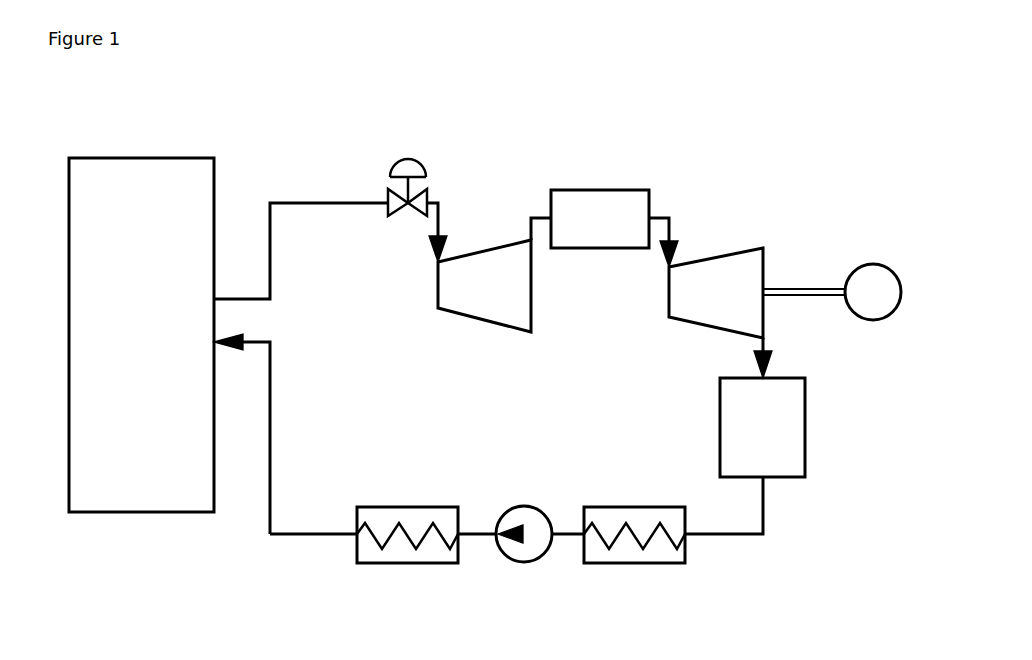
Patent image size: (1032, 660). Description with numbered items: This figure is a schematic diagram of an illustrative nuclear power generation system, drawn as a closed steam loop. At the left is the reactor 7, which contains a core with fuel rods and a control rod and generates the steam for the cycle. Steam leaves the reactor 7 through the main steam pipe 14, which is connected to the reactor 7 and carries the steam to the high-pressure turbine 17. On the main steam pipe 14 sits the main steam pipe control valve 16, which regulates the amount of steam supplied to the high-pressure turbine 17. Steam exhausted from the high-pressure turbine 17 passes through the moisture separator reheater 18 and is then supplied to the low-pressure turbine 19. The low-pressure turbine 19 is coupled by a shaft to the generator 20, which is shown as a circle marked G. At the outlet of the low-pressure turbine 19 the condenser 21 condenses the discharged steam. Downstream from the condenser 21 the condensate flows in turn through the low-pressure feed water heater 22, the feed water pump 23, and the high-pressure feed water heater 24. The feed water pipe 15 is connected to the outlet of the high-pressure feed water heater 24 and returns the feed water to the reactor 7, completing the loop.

The reactor 7 is at (143, 158).
The main steam pipe 14 is at (243, 299).
The feed water pipe 15 is at (255, 339).
The main steam pipe control valve 16 is at (427, 190).
The high-pressure turbine 17 is at (482, 320).
The moisture separator reheater 18 is at (598, 190).
The low-pressure turbine 19 is at (713, 257).
The generator 20 is at (875, 264).
The condenser 21 is at (805, 425).
The low-pressure feed water heater 22 is at (632, 563).
The feed water pump 23 is at (522, 563).
The high-pressure feed water heater 24 is at (405, 563).